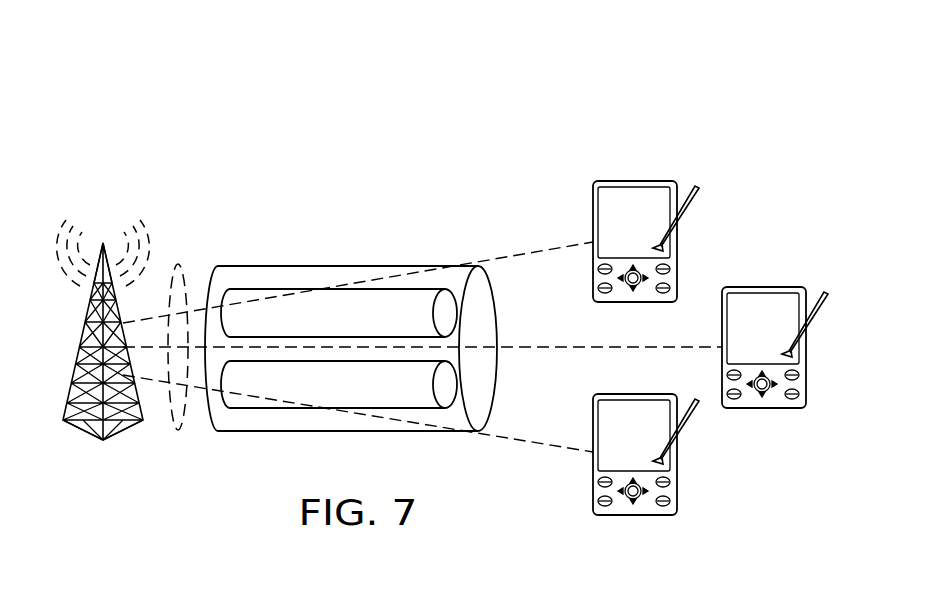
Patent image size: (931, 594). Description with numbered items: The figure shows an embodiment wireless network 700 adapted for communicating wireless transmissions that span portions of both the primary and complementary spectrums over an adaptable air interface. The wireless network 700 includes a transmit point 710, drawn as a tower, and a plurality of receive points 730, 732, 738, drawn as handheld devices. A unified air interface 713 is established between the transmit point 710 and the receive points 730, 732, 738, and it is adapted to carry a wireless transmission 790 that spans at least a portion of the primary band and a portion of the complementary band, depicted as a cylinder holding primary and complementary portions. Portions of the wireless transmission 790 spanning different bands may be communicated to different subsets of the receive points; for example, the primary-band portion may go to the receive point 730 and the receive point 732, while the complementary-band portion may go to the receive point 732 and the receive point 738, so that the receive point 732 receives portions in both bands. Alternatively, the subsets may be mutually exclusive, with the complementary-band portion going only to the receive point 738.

The wireless network 700 is at (522, 122).
The transmit point 710 is at (83, 434).
The unified air interface 713 is at (178, 430).
The wireless transmission 790 is at (332, 265).
The receive point 730 is at (633, 181).
The receive point 732 is at (762, 407).
The receive point 738 is at (633, 513).